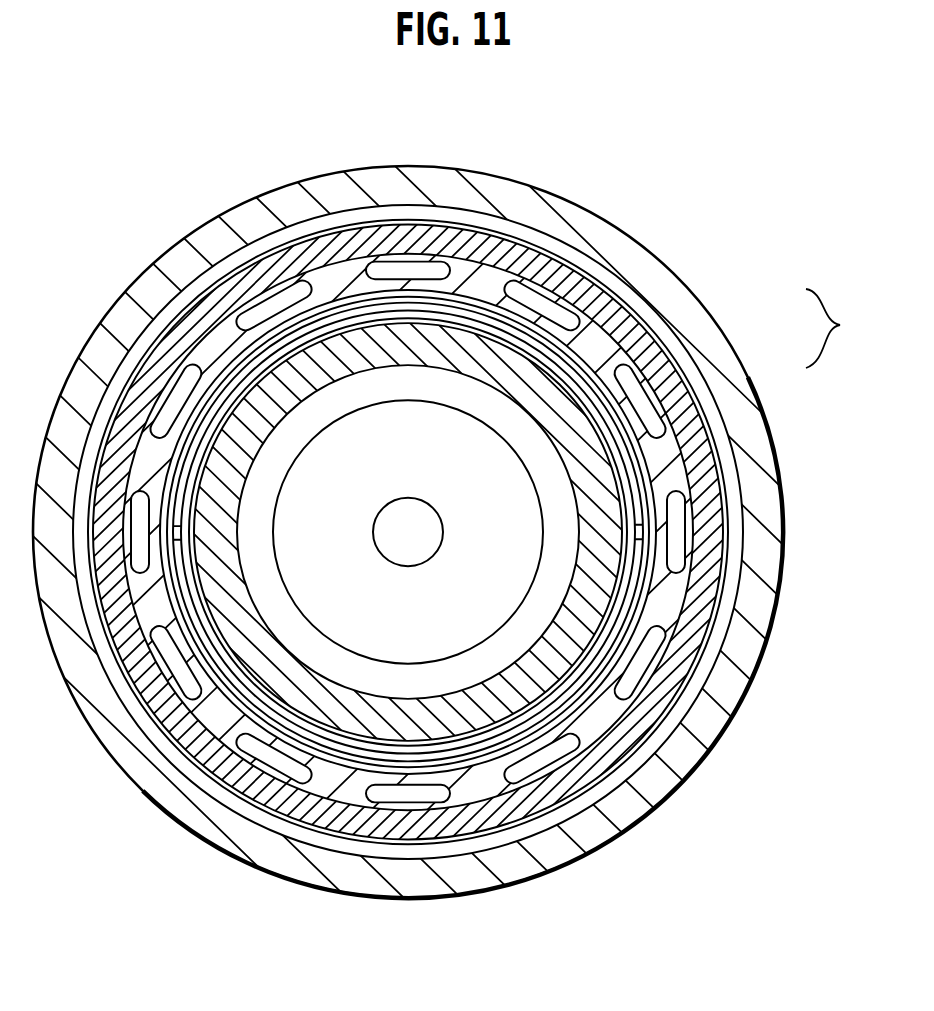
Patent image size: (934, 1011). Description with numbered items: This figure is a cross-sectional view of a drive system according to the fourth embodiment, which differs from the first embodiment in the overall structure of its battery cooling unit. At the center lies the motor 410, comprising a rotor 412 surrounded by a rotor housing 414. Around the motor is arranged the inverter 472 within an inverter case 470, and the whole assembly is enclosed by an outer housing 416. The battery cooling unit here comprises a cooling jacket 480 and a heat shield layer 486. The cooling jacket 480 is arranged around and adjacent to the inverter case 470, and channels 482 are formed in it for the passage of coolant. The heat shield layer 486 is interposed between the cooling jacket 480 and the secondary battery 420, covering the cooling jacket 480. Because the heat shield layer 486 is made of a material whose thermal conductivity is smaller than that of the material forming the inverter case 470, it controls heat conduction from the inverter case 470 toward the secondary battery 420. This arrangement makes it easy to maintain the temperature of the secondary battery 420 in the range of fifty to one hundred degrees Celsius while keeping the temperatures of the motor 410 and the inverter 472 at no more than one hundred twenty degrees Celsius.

The motor 410 is at (849, 328).
The rotor 412 is at (492, 470).
The rotor housing 414 is at (548, 390).
The outer housing 416 is at (662, 258).
The secondary battery 420 is at (458, 863).
The inverter case 470 is at (353, 763).
The inverter 472 is at (332, 767).
The cooling jacket 480 is at (222, 340).
The channel 482 is at (173, 407).
The heat shield layer 486 is at (441, 240).